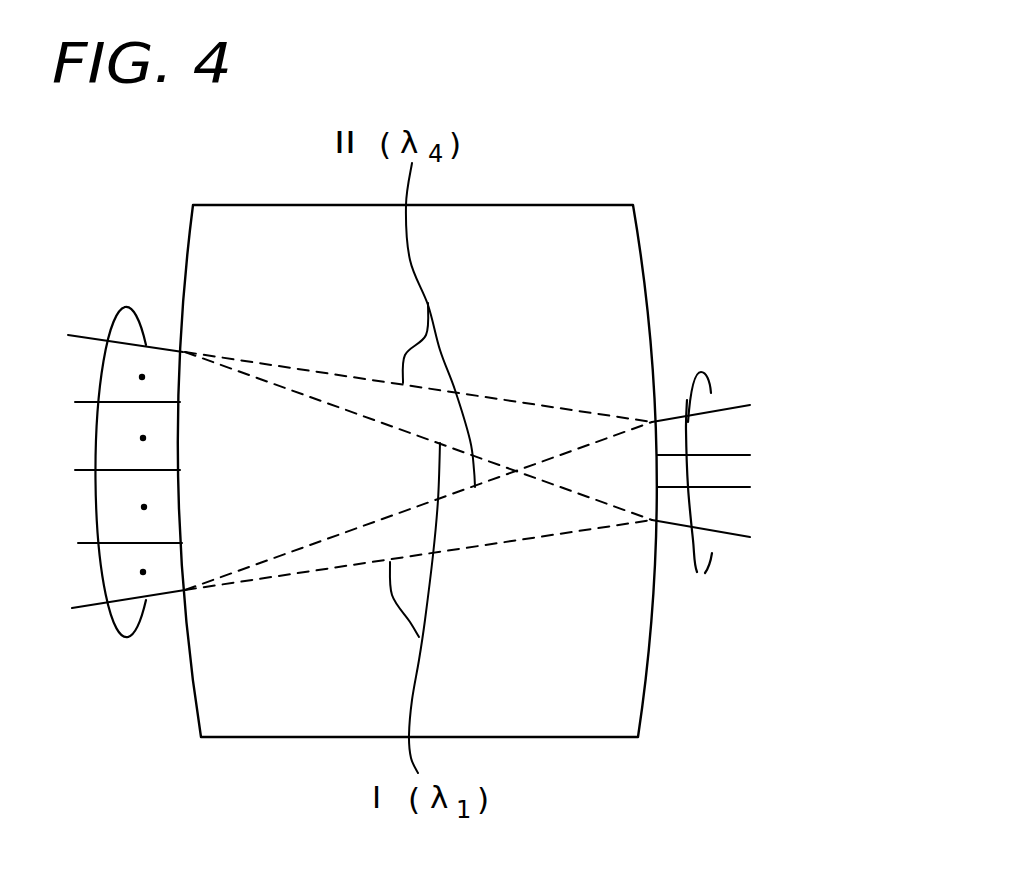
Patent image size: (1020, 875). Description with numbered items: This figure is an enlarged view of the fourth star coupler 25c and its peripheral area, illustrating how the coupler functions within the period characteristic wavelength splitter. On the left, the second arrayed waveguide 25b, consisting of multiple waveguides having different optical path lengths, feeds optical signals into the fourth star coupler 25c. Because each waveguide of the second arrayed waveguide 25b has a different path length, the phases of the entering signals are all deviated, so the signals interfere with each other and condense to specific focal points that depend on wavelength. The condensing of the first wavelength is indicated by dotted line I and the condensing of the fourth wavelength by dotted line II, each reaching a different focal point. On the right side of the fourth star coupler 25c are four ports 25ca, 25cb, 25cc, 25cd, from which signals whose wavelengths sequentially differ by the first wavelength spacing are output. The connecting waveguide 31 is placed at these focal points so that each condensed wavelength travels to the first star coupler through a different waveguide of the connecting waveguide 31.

The second arrayed waveguide 25b is at (122, 305).
The fourth star coupler 25c is at (553, 235).
The port 25ca is at (672, 420).
The port 25cb is at (728, 455).
The port 25cc is at (728, 487).
The port 25cd is at (668, 523).
The connecting waveguide 31 is at (697, 572).